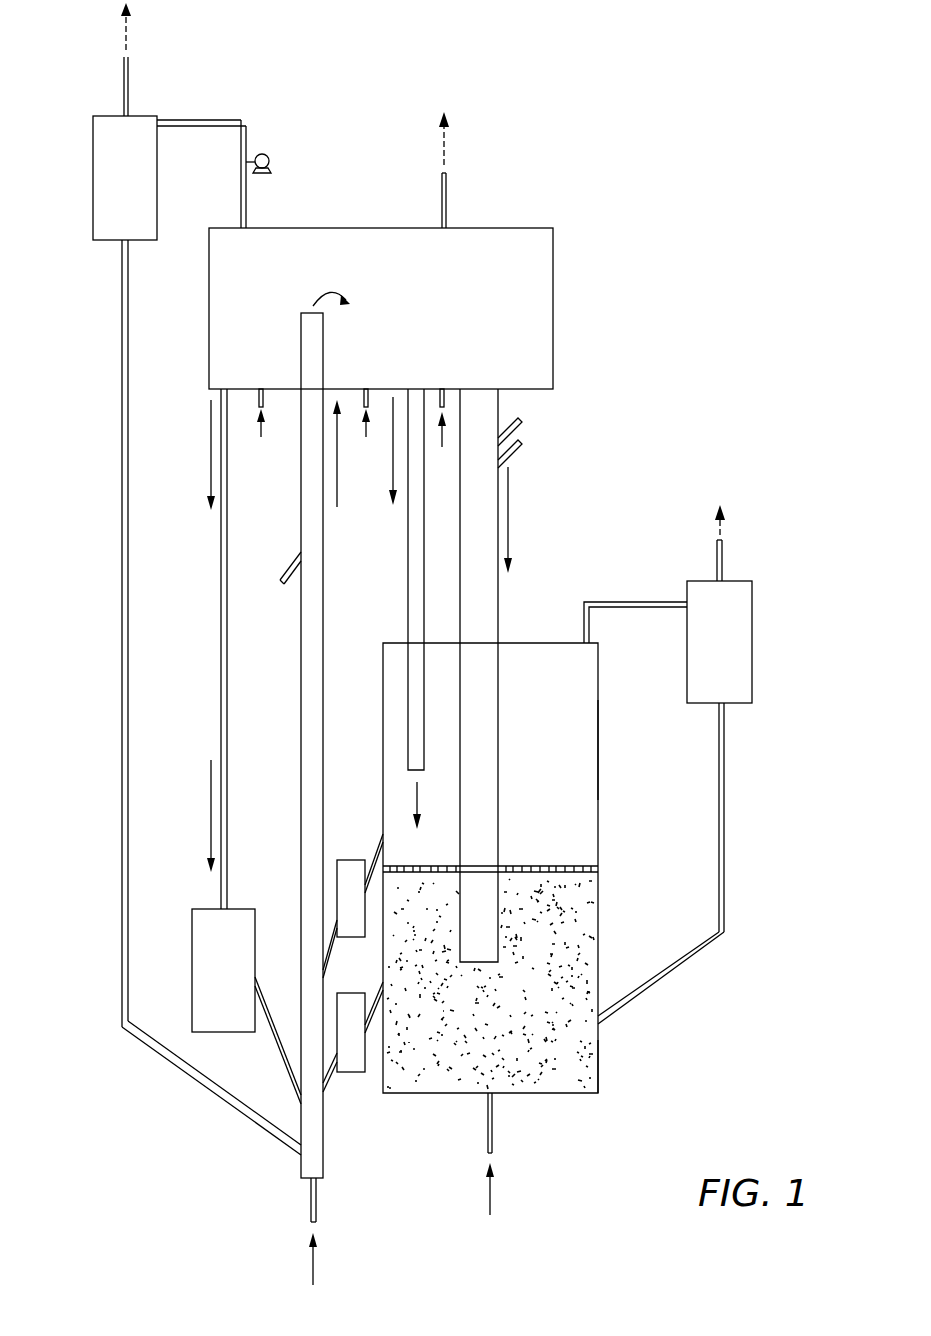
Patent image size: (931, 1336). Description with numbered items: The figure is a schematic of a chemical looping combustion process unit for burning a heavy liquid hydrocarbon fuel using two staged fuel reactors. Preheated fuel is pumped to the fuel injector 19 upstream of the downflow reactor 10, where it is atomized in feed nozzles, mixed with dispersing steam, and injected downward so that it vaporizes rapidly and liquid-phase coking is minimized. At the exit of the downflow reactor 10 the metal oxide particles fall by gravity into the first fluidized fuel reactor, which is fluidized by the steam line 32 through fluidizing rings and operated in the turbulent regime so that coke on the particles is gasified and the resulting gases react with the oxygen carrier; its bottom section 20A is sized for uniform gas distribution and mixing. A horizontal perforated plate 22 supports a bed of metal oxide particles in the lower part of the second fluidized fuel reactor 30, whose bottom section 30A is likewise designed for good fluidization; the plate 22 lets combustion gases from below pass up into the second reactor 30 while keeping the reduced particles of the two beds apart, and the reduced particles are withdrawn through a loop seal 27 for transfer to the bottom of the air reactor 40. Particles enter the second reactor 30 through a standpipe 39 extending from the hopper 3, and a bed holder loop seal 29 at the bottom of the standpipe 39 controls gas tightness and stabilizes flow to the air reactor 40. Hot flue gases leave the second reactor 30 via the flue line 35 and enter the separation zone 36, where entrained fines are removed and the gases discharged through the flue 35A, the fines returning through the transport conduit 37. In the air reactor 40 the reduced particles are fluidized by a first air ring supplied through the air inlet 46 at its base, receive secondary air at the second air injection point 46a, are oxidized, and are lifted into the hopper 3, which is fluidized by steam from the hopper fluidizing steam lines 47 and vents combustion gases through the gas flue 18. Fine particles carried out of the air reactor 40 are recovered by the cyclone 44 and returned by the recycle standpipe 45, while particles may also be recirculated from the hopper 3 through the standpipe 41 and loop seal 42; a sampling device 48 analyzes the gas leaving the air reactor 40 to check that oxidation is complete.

The hopper 3 is at (402, 318).
The downflow reactor 10 is at (492, 558).
The gas flue 18 is at (447, 187).
The fuel injector 19 is at (522, 442).
The bottom section 20A is at (592, 1076).
The perforated plate 22 is at (586, 868).
The loop seal 27 is at (352, 1058).
The bed holder loop seal 29 is at (352, 870).
The second fluidized fuel reactor 30 is at (564, 754).
The bottom section 30A is at (592, 806).
The steam line 32 is at (486, 1122).
The flue line 35 is at (623, 602).
The flue 35A is at (723, 565).
The separation zone 36 is at (733, 646).
The transport conduit 37 is at (724, 813).
The standpipe 39 is at (408, 588).
The air reactor 40 is at (303, 470).
The standpipe 41 is at (221, 607).
The loop seal 42 is at (237, 981).
The cyclone 44 is at (139, 201).
The recycle standpipe 45 is at (122, 533).
The inlet pipe 46 is at (310, 1208).
The second air injection point 46a is at (281, 585).
The hopper fluidizing steam lines 47 is at (261, 437).
The sampling device 48 is at (270, 163).